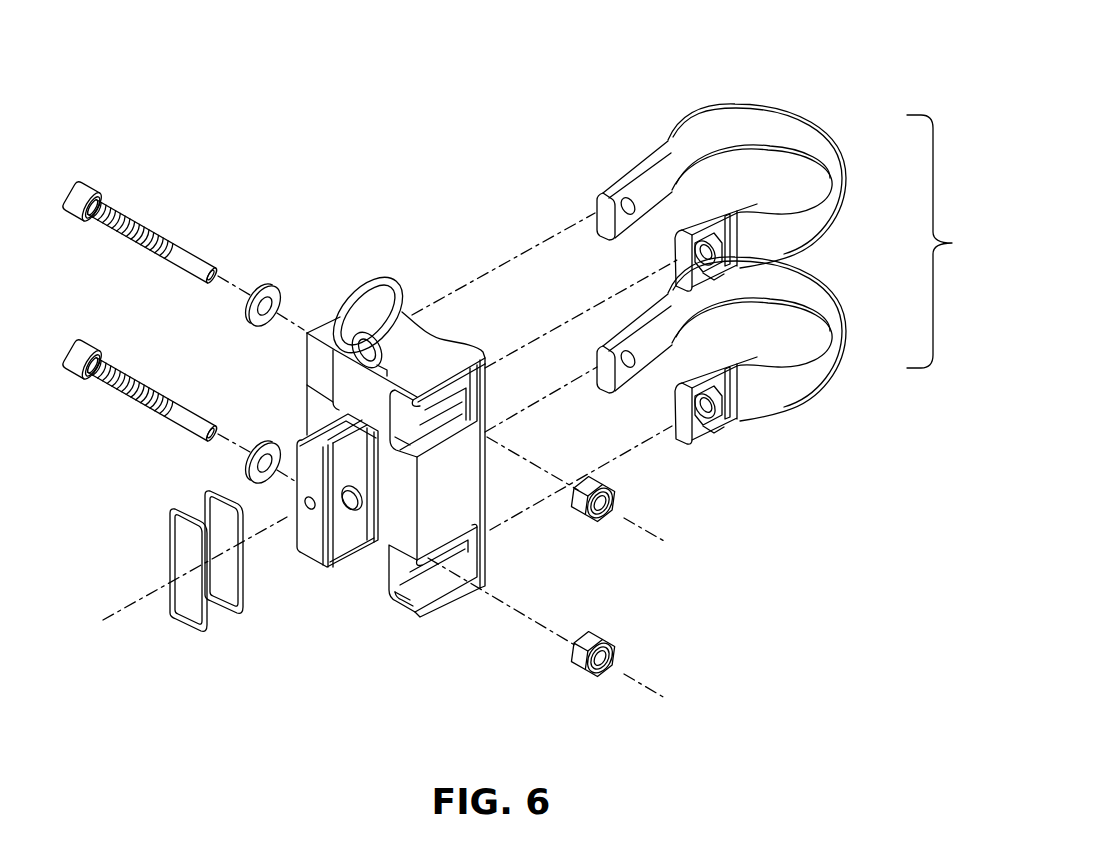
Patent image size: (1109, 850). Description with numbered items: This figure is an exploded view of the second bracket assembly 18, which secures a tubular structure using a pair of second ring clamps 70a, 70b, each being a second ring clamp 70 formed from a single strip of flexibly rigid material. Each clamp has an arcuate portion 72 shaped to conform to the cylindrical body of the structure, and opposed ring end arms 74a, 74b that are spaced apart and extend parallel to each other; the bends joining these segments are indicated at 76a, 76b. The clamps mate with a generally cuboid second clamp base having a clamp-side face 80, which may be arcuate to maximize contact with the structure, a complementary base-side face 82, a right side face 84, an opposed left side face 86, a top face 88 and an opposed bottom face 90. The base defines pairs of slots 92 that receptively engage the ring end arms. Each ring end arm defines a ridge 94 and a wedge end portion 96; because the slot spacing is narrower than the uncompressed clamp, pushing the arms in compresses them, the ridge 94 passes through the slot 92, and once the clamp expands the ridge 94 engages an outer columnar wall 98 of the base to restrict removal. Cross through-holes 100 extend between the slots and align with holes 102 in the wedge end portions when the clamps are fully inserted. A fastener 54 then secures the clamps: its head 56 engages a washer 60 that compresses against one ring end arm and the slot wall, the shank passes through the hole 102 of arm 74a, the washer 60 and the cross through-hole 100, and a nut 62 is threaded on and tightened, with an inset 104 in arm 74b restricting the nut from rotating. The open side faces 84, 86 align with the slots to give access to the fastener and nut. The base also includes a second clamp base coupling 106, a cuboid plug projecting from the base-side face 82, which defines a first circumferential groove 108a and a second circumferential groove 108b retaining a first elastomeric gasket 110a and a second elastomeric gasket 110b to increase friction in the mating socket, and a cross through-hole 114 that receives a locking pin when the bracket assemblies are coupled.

The second bracket assembly 18 is at (405, 128).
The fastener 54 is at (141, 292).
The head 56 is at (140, 226).
The washer 60 is at (256, 290).
The nut 62 is at (620, 490).
The second ring clamp 70 is at (947, 241).
The second ring clamp 70a is at (722, 219).
The second ring clamp 70b is at (756, 246).
The arcuate portion 72 is at (748, 78).
The ring end arm 74a is at (598, 182).
The ring end arm 74b is at (676, 292).
The lower tab of upper clamp 76a is at (707, 219).
The lower tab of lower clamp 76b is at (740, 262).
The clamp-side face 80 is at (377, 472).
The complementary base-side face 82 is at (365, 576).
The right side face 84 is at (267, 384).
The left side face 86 is at (409, 498).
The top face 88 is at (424, 369).
The bottom face 90 is at (392, 602).
The slots 92 is at (333, 385).
The ridge 94 is at (737, 234).
The wedge end portion 96 is at (692, 274).
The outer columnar wall 98 is at (486, 380).
The cross through-holes 100 is at (413, 405).
The holes 102 is at (690, 246).
The inset 104 is at (722, 273).
The second clamp base coupling 106 is at (321, 538).
The first circumferential groove 108a is at (313, 431).
The second circumferential groove 108b is at (313, 389).
The first elastomeric gasket 110a is at (167, 535).
The second elastomeric gasket 110b is at (204, 489).
The cross through-hole 114 is at (338, 575).